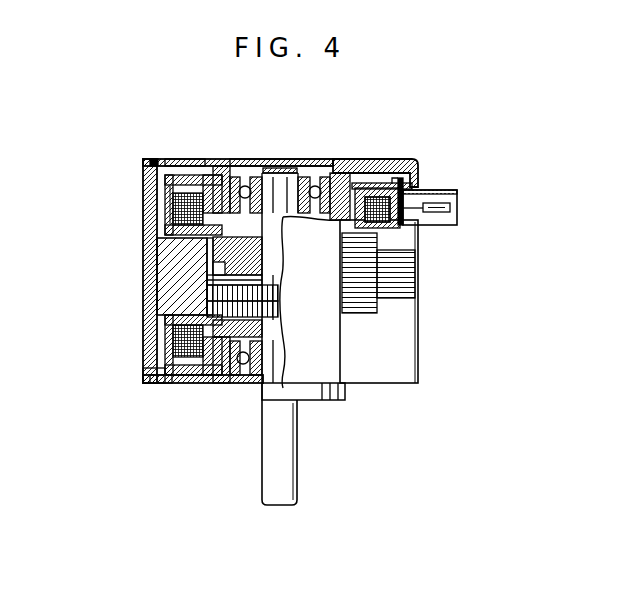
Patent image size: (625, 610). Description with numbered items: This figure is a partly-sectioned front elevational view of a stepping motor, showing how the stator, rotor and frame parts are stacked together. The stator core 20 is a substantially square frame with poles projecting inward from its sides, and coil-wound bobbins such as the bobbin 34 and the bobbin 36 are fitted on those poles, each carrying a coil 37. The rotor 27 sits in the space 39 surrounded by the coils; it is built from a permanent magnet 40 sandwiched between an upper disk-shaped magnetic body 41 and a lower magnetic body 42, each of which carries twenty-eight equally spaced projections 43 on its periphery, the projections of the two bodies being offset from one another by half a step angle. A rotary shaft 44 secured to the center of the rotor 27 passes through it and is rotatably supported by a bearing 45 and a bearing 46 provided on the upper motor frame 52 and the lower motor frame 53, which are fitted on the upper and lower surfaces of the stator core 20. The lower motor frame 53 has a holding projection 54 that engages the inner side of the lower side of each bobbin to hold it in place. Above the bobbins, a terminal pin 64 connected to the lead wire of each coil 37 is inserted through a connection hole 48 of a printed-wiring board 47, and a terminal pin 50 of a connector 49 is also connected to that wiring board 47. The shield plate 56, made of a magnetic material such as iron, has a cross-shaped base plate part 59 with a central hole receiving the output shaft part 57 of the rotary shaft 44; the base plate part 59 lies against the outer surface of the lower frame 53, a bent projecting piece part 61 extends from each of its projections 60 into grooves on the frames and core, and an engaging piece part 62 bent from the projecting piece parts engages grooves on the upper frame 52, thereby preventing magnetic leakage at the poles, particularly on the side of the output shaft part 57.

The stator core 20 is at (195, 276).
The rotor 27 is at (197, 250).
The bobbin 34 is at (357, 182).
The bobbin 36 is at (174, 343).
The coil 37 is at (176, 384).
The space 39 is at (282, 164).
The permanent magnet 40 is at (165, 288).
The magnetic body 41 is at (172, 221).
The magnetic body 42 is at (279, 307).
The projections 43 is at (279, 289).
The rotary shaft 44 is at (261, 388).
The bearing 45 is at (248, 185).
The bearing 46 is at (225, 385).
The printed-wiring board 47 is at (207, 165).
The connection hole 48 is at (163, 184).
The connector 49 is at (443, 190).
The terminal pin 50 is at (417, 170).
The upper motor frame 52 is at (396, 166).
The lower motor frame 53 is at (155, 371).
The holding projection 54 is at (190, 384).
The shield plate 56 is at (150, 388).
The output shaft part 57 is at (298, 488).
The base plate part 59 is at (208, 384).
The projections 60 is at (160, 384).
The projecting piece part 61 is at (160, 323).
The engaging piece part 62 is at (152, 158).
The terminal pin 64 is at (180, 158).